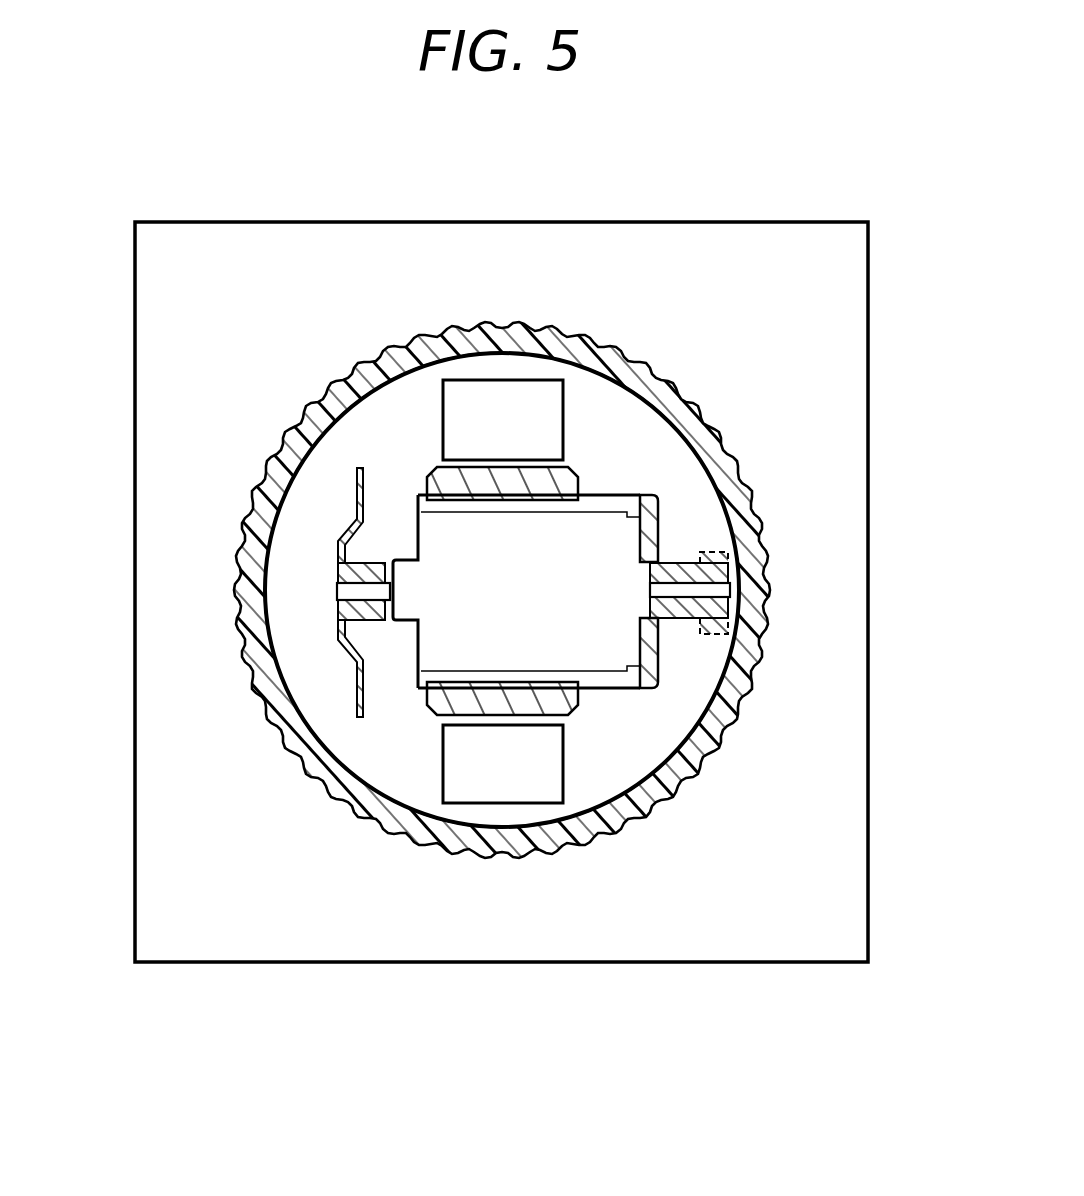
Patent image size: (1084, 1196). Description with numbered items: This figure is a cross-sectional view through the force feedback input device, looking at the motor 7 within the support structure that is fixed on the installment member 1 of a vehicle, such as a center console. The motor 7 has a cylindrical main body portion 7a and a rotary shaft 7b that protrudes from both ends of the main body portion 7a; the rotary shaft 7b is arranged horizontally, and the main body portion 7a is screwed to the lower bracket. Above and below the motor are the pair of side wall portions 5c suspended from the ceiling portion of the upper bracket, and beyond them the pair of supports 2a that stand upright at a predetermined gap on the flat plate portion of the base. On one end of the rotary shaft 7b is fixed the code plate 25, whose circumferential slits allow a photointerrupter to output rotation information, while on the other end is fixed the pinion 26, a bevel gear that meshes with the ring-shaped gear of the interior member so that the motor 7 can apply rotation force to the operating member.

The installment member 1 is at (831, 242).
The supports 2a is at (497, 399).
The side wall portions 5c is at (567, 484).
The motor 7 is at (506, 599).
The main body portion 7a is at (627, 647).
The rotary shaft 7b is at (340, 591).
The code plate 25 is at (350, 534).
The pinion 26 is at (720, 549).